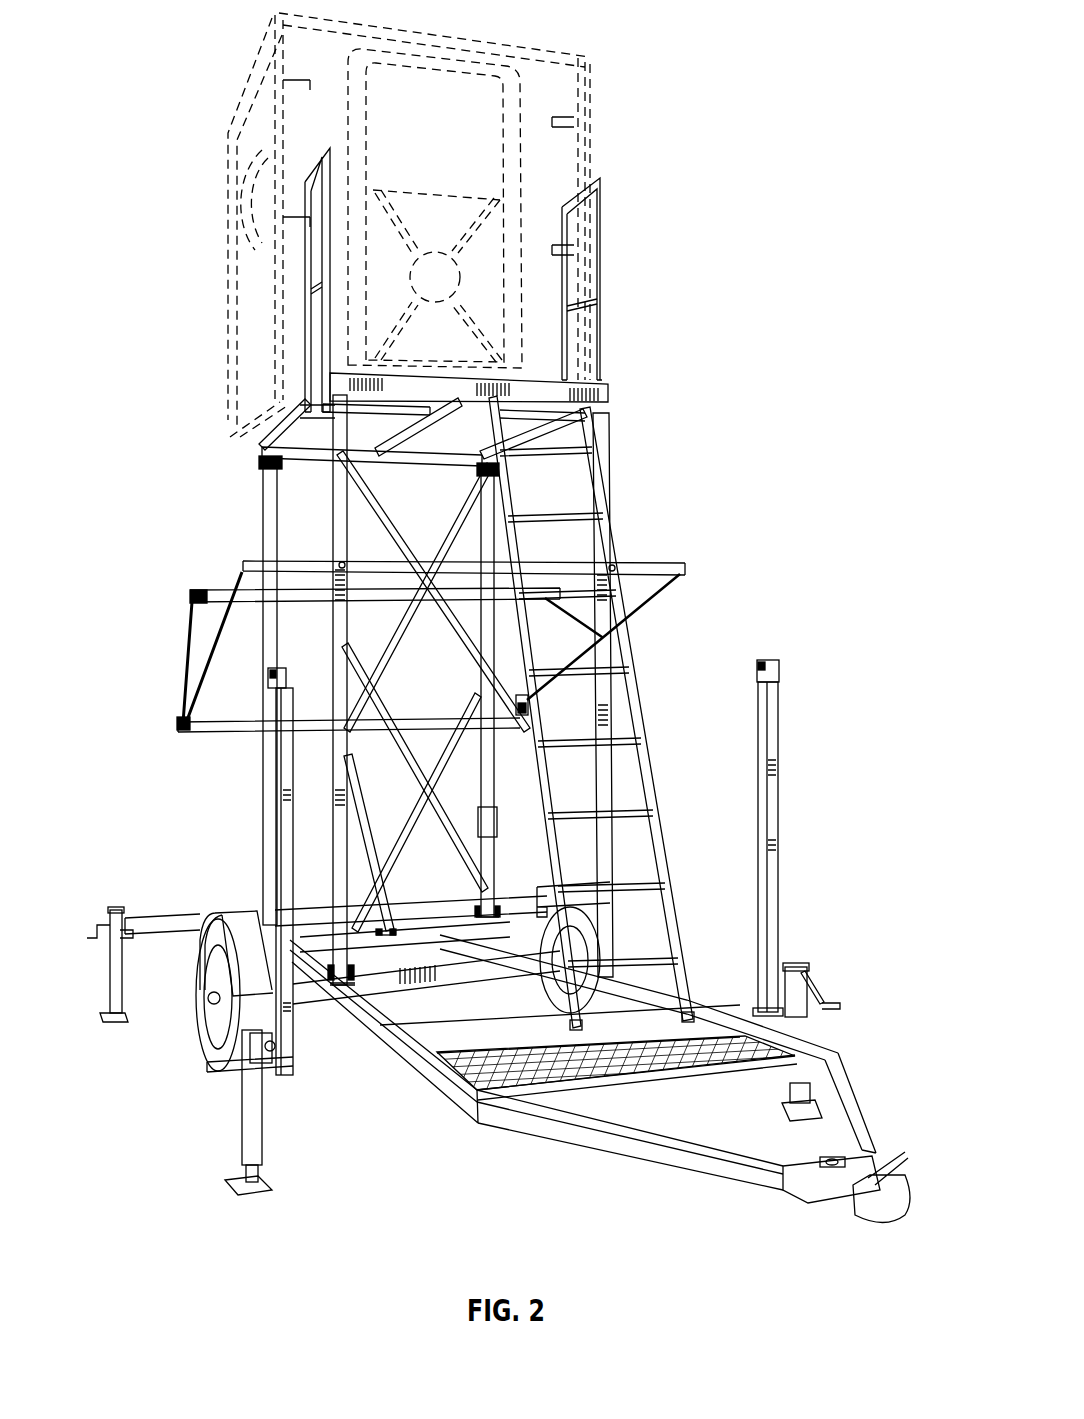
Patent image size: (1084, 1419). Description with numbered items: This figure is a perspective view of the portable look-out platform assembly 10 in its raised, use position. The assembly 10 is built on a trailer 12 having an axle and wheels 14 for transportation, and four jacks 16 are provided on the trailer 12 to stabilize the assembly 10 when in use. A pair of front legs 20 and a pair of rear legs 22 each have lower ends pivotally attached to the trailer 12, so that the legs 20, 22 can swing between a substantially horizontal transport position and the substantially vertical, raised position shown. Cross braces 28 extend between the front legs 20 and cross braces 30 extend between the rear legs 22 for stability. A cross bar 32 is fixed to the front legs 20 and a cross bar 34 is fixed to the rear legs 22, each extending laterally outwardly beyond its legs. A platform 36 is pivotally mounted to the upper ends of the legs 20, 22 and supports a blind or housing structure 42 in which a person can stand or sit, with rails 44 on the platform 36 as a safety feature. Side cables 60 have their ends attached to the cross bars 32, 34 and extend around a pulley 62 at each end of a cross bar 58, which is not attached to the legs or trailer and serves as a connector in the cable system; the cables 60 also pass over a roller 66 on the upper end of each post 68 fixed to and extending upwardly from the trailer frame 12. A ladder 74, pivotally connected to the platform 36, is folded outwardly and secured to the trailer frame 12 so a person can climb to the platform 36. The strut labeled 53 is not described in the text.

The portable look-out platform assembly 10 is at (750, 410).
The trailer 12 is at (430, 1073).
The wheels 14 is at (200, 1025).
The jacks 16 is at (120, 980).
The front legs 20 is at (337, 507).
The rear legs 22 is at (272, 517).
The cross braces 28 is at (383, 517).
The cross braces 30 is at (390, 667).
The cross bar 32 is at (250, 559).
The cross bar 34 is at (203, 589).
The platform 36 is at (310, 437).
The blind or housing structure 42 is at (232, 262).
The rails 44 is at (330, 150).
The lock strut 53 is at (363, 813).
The cross bar 58 is at (233, 735).
The side cables 60 is at (185, 660).
The pulley 62 is at (182, 728).
The roller 66 is at (280, 672).
The posts 68 is at (285, 804).
The ladder 74 is at (657, 786).